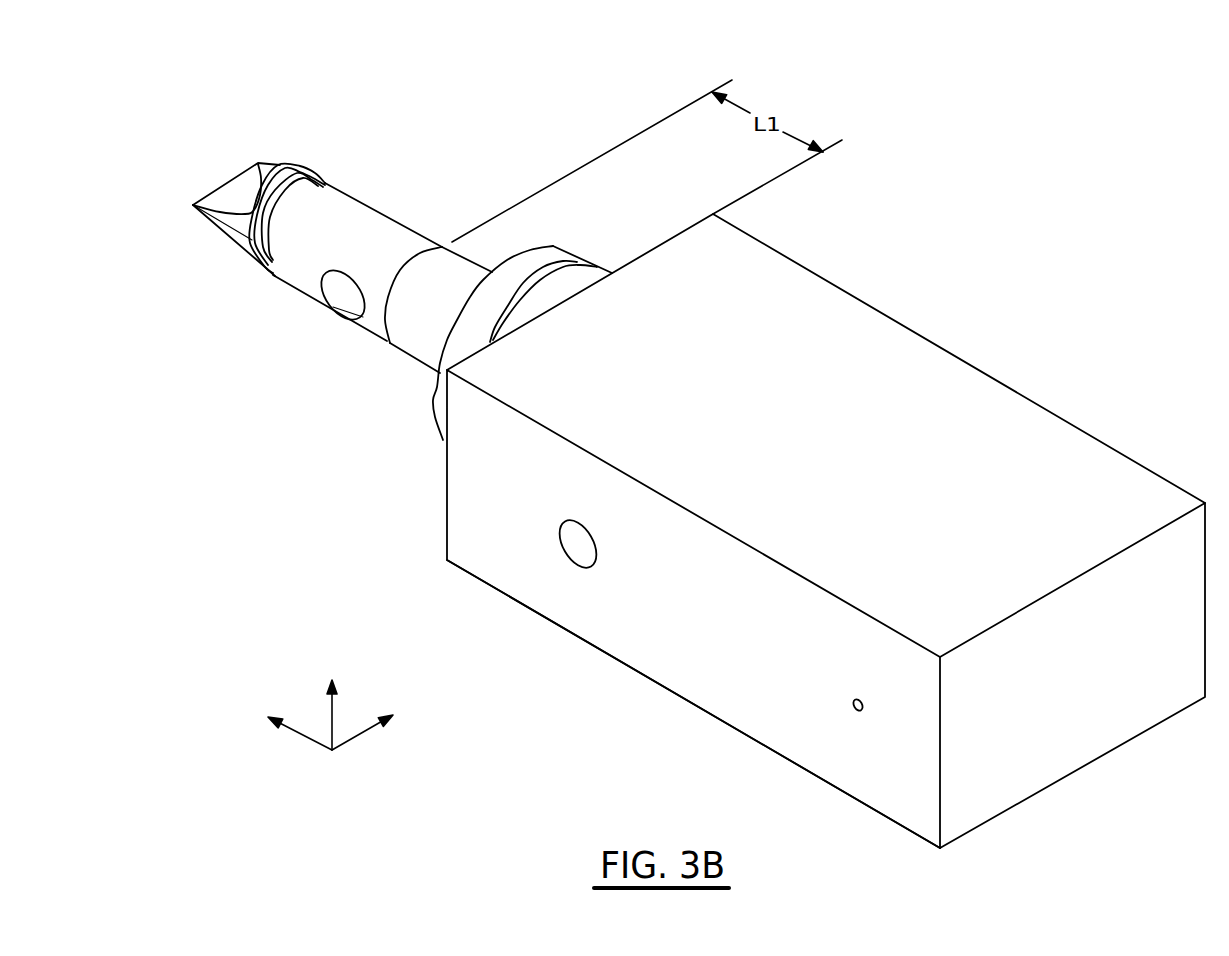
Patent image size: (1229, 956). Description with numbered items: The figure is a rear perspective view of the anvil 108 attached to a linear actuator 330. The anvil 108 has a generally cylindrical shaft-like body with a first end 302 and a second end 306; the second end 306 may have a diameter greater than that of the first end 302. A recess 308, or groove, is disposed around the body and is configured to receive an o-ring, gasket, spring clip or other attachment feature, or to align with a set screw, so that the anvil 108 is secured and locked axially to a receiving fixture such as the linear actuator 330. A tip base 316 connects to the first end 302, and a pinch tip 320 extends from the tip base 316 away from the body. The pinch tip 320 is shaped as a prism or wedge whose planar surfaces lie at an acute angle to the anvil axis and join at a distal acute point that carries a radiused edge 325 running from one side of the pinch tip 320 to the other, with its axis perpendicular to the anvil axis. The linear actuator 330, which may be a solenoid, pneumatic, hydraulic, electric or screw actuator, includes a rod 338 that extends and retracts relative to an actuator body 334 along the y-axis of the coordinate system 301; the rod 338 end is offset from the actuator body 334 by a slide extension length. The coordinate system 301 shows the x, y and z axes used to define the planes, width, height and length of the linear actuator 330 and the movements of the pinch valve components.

The anvil 108 is at (370, 244).
The coordinate system 301 is at (328, 760).
The first end 302 is at (273, 288).
The second end 306 is at (439, 243).
The recess 308 is at (322, 182).
The tip base 316 is at (228, 243).
The pinch tip 320 is at (277, 161).
The radiused edge 325 is at (220, 173).
The linear actuator 330 is at (940, 308).
The actuator body 334 is at (668, 693).
The rod 338 is at (403, 361).